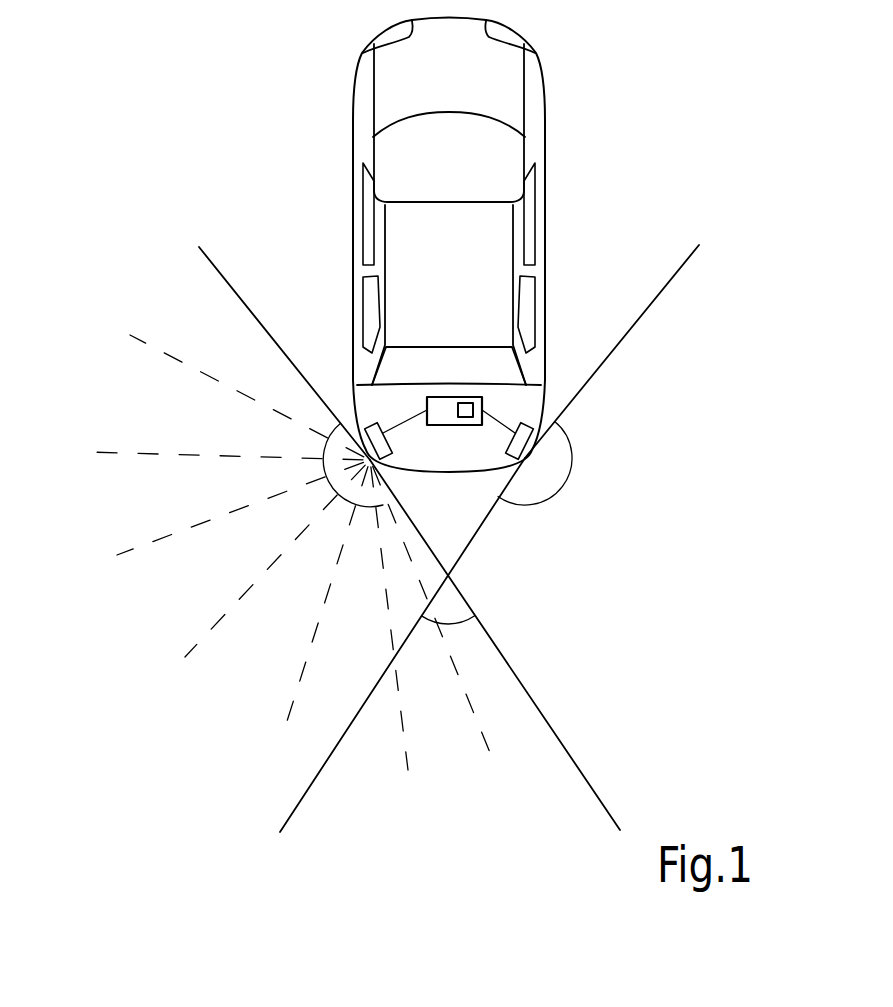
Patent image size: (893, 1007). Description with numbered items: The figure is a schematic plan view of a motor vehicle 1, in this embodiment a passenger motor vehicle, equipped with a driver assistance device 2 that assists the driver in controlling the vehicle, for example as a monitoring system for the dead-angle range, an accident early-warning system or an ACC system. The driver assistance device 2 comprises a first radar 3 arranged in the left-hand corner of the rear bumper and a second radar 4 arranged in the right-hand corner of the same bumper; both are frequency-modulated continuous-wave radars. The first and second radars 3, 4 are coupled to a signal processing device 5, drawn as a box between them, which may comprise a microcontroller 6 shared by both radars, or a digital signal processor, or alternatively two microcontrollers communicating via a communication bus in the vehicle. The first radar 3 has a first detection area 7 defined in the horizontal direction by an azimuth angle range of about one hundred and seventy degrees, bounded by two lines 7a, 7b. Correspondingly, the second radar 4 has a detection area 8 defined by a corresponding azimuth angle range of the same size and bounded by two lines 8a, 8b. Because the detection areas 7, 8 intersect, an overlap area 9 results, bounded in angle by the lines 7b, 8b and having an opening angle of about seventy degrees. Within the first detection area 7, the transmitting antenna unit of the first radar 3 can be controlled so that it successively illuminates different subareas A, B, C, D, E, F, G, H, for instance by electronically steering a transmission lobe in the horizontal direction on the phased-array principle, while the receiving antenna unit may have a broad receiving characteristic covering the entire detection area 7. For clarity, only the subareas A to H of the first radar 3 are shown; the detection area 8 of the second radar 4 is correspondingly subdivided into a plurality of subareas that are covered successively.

The motor vehicle 1 is at (353, 274).
The driver assistance device 2 is at (517, 393).
The first radar 3 is at (390, 450).
The second radar 4 is at (508, 452).
The signal processing device 5 is at (437, 403).
The microcontroller 6 is at (467, 403).
The first detection area 7 is at (262, 486).
The line 7a is at (238, 298).
The line 7b is at (588, 787).
The detection area 8 is at (615, 455).
The line 8a is at (685, 267).
The line 8b is at (305, 788).
The overlap area 9 is at (457, 720).
The subarea A is at (178, 307).
The subarea B is at (140, 407).
The subarea C is at (140, 502).
The subarea D is at (163, 598).
The subarea E is at (238, 662).
The subarea F is at (343, 690).
The subarea G is at (452, 743).
The subarea H is at (518, 713).